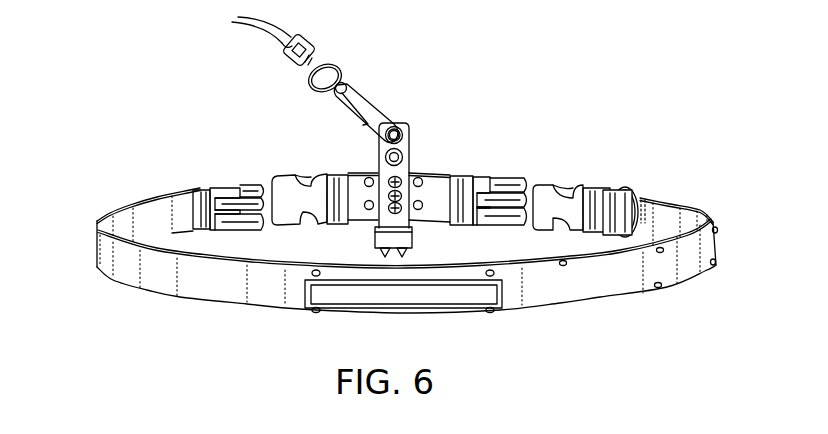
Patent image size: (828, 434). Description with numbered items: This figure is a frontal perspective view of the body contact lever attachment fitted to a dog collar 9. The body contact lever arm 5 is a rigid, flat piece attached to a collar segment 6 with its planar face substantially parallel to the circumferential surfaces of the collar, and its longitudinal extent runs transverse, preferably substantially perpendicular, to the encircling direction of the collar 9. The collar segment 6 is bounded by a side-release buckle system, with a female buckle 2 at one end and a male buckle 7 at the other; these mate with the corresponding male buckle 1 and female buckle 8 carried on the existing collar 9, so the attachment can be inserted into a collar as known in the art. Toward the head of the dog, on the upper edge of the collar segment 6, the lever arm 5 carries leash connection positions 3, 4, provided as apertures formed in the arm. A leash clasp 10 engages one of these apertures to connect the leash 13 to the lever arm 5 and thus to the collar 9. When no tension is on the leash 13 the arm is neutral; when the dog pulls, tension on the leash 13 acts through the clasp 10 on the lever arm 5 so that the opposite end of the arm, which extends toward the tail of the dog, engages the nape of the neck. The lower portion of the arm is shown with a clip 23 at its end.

The male side-release buckle 1 is at (222, 186).
The female side-release buckle 2 is at (287, 173).
The leash connection position 3 is at (377, 157).
The leash connection position 4 is at (407, 118).
The body contact lever arm 5 is at (422, 170).
The collar segment 6 is at (441, 177).
The male side-release buckle 7 is at (490, 178).
The female side-release buckle 8 is at (558, 182).
The dog collar 9 is at (670, 210).
The leash clasp 10 is at (368, 107).
The leash 13 is at (267, 38).
The clip 23 is at (375, 240).